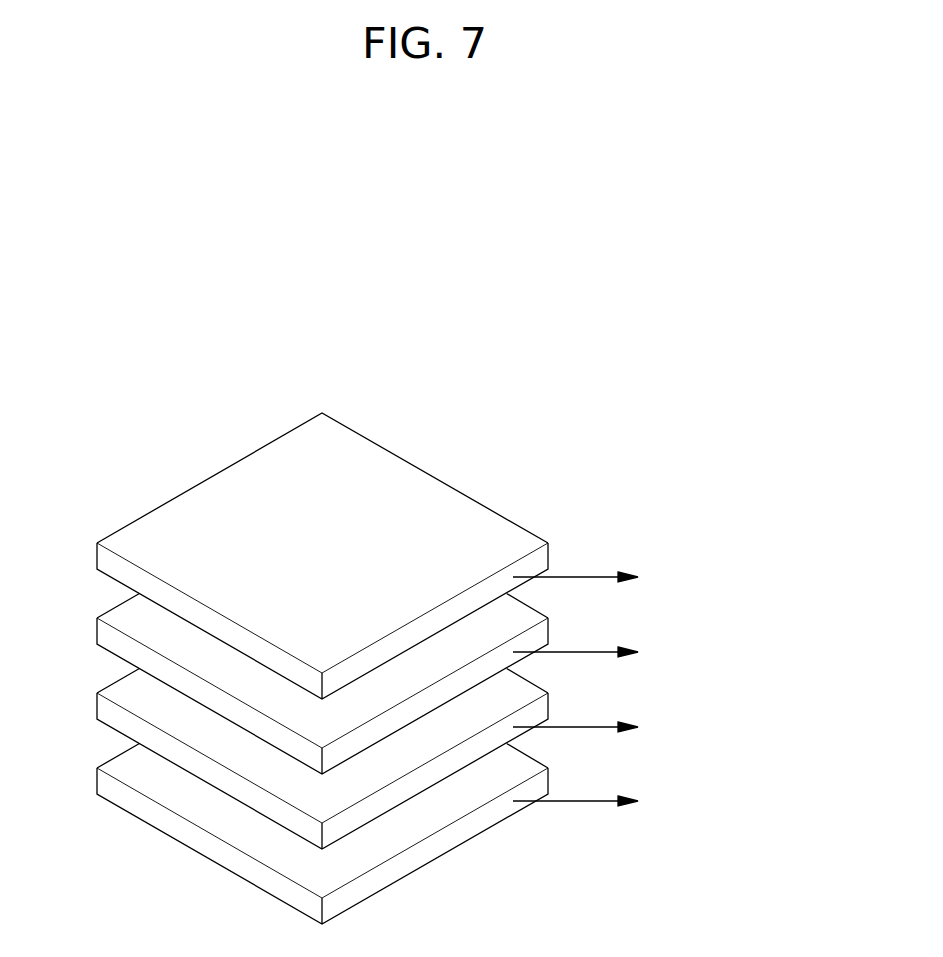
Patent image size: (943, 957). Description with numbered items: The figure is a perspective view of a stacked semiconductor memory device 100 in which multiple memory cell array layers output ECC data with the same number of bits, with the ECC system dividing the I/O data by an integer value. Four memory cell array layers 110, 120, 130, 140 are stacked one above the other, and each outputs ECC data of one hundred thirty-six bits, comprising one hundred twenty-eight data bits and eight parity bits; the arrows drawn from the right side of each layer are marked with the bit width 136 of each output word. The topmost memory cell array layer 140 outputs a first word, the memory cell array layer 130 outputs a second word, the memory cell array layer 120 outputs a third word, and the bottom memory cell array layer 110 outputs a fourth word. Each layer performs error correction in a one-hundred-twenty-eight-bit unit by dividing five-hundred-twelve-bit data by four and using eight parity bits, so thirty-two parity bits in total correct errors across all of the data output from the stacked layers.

The stacked semiconductor memory device 100 is at (355, 355).
The memory cell array layer 110 is at (103, 782).
The memory cell array layer 120 is at (103, 707).
The memory cell array layer 130 is at (103, 632).
The memory cell array layer 140 is at (103, 557).
The 136-bit word (128-bit data + 8-bit parity) 136 is at (588, 792).